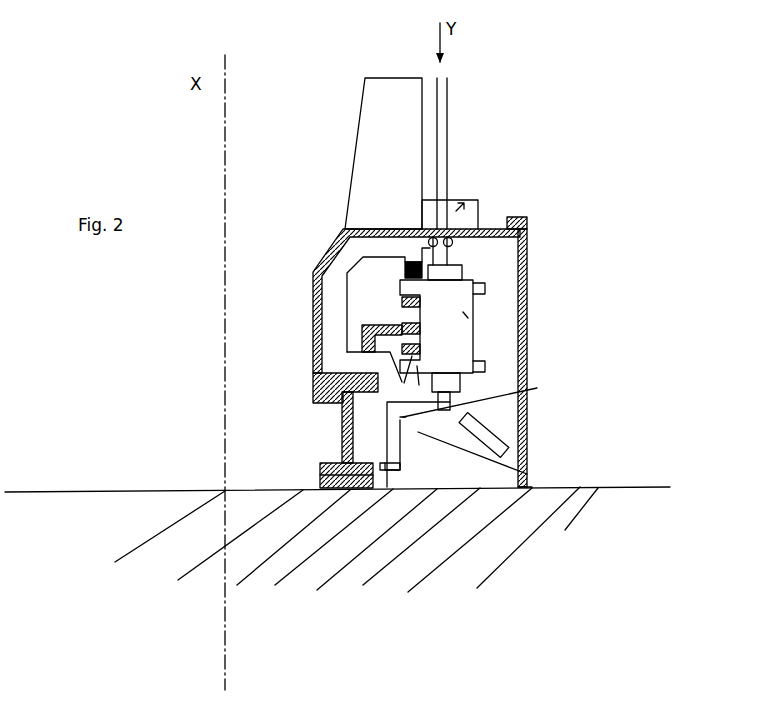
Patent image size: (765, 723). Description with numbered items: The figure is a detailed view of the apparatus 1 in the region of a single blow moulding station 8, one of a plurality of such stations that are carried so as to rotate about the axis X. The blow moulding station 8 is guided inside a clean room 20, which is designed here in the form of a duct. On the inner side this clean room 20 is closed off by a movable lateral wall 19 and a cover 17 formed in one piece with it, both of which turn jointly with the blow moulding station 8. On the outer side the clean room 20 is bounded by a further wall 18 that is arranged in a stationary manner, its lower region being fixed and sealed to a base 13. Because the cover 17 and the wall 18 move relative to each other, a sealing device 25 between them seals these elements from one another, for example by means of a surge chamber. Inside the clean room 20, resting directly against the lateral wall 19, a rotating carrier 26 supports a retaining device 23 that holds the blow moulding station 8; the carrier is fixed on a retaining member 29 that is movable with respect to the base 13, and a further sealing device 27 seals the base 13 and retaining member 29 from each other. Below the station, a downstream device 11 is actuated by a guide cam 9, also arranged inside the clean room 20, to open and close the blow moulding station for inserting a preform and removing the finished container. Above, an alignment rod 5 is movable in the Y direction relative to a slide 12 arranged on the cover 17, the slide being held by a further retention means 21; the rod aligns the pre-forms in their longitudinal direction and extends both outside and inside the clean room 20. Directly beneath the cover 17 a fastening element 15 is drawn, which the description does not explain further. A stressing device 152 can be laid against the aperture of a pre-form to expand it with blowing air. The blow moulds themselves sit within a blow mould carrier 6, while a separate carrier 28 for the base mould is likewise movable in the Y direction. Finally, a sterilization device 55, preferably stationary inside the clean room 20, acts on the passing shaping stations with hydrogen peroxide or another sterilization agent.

The apparatus 1 is at (317, 138).
The alignment rod 5 is at (442, 153).
The blow mould carrier 6 is at (467, 348).
The blow moulding station 8 is at (473, 317).
The guide cam 9 is at (393, 470).
The downstream device 11 is at (525, 483).
The slide 12 is at (475, 200).
The base 13 is at (537, 540).
The nut 15 is at (500, 247).
The cover 17 is at (388, 228).
The wall 18 is at (528, 287).
The lateral wall 19 is at (312, 312).
The clean room 20 is at (493, 423).
The retention means 21 is at (408, 118).
The retaining device 23 is at (378, 325).
The sealing device 25 is at (527, 218).
The carrier 26 is at (337, 360).
The sealing device 27 is at (318, 480).
The carrier for a base mould 28 is at (537, 388).
The retaining member 29 is at (340, 442).
The sterilization device 55 is at (387, 427).
The stressing device 152 is at (474, 272).